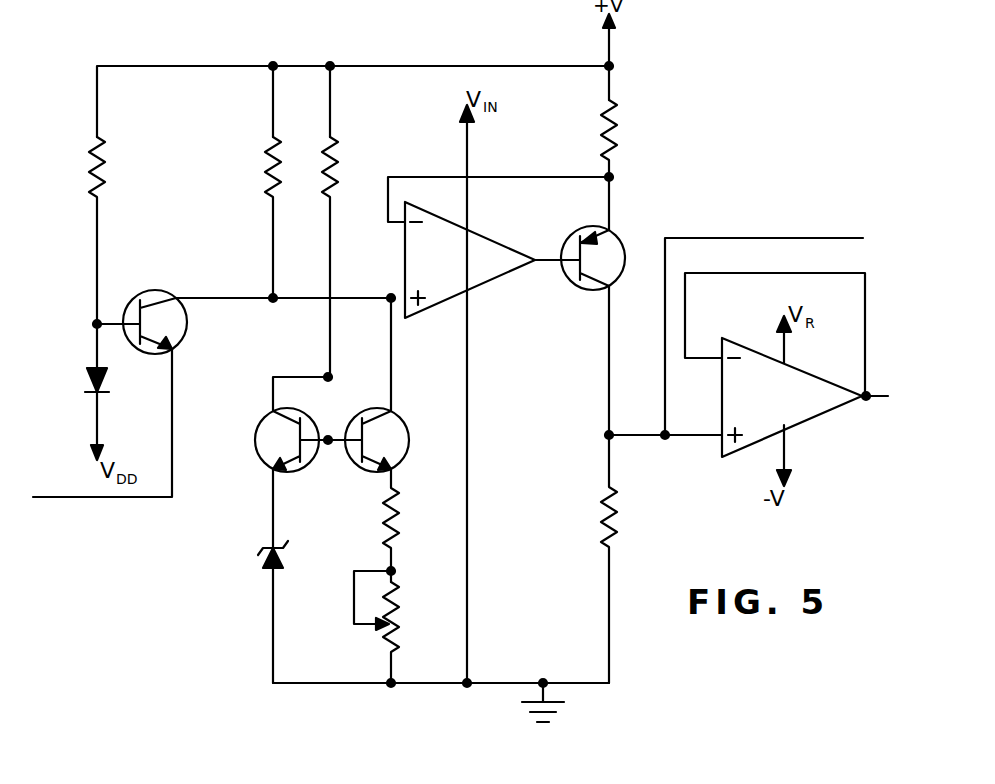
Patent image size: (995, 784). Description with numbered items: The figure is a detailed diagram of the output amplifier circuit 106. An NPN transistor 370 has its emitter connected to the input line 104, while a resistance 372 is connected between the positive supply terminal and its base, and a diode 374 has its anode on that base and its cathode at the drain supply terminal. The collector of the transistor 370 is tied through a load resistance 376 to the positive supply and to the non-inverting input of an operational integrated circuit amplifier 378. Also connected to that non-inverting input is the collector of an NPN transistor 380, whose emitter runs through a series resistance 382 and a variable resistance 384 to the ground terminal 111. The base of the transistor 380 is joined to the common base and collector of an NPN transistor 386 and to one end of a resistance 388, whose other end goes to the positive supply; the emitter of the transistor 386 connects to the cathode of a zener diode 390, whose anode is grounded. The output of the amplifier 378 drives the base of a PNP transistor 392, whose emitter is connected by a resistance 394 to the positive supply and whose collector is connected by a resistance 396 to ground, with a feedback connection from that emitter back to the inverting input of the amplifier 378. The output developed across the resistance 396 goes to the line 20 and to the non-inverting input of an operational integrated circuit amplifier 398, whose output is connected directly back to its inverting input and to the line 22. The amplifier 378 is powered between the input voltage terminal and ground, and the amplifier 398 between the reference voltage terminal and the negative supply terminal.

The line 20 is at (805, 238).
The line 22 is at (876, 392).
The input line 104 is at (147, 498).
The amplifier circuit 106 is at (708, 190).
The ground terminal 111 is at (550, 690).
The NPN transistor 370 is at (163, 290).
The resistance 372 is at (100, 140).
The diode 374 is at (108, 378).
The load resistance 376 is at (268, 165).
The operational integrated circuit amplifier 378 is at (482, 234).
The NPN transistor 380 is at (406, 430).
The series resistance 382 is at (385, 528).
The variable resistance 384 is at (400, 612).
The NPN transistor 386 is at (258, 428).
The resistance 388 is at (335, 150).
The zener diode 390 is at (262, 556).
The PNP transistor 392 is at (620, 235).
The resistance 394 is at (615, 120).
The resistance 396 is at (618, 508).
The operational integrated circuit amplifier 398 is at (752, 450).